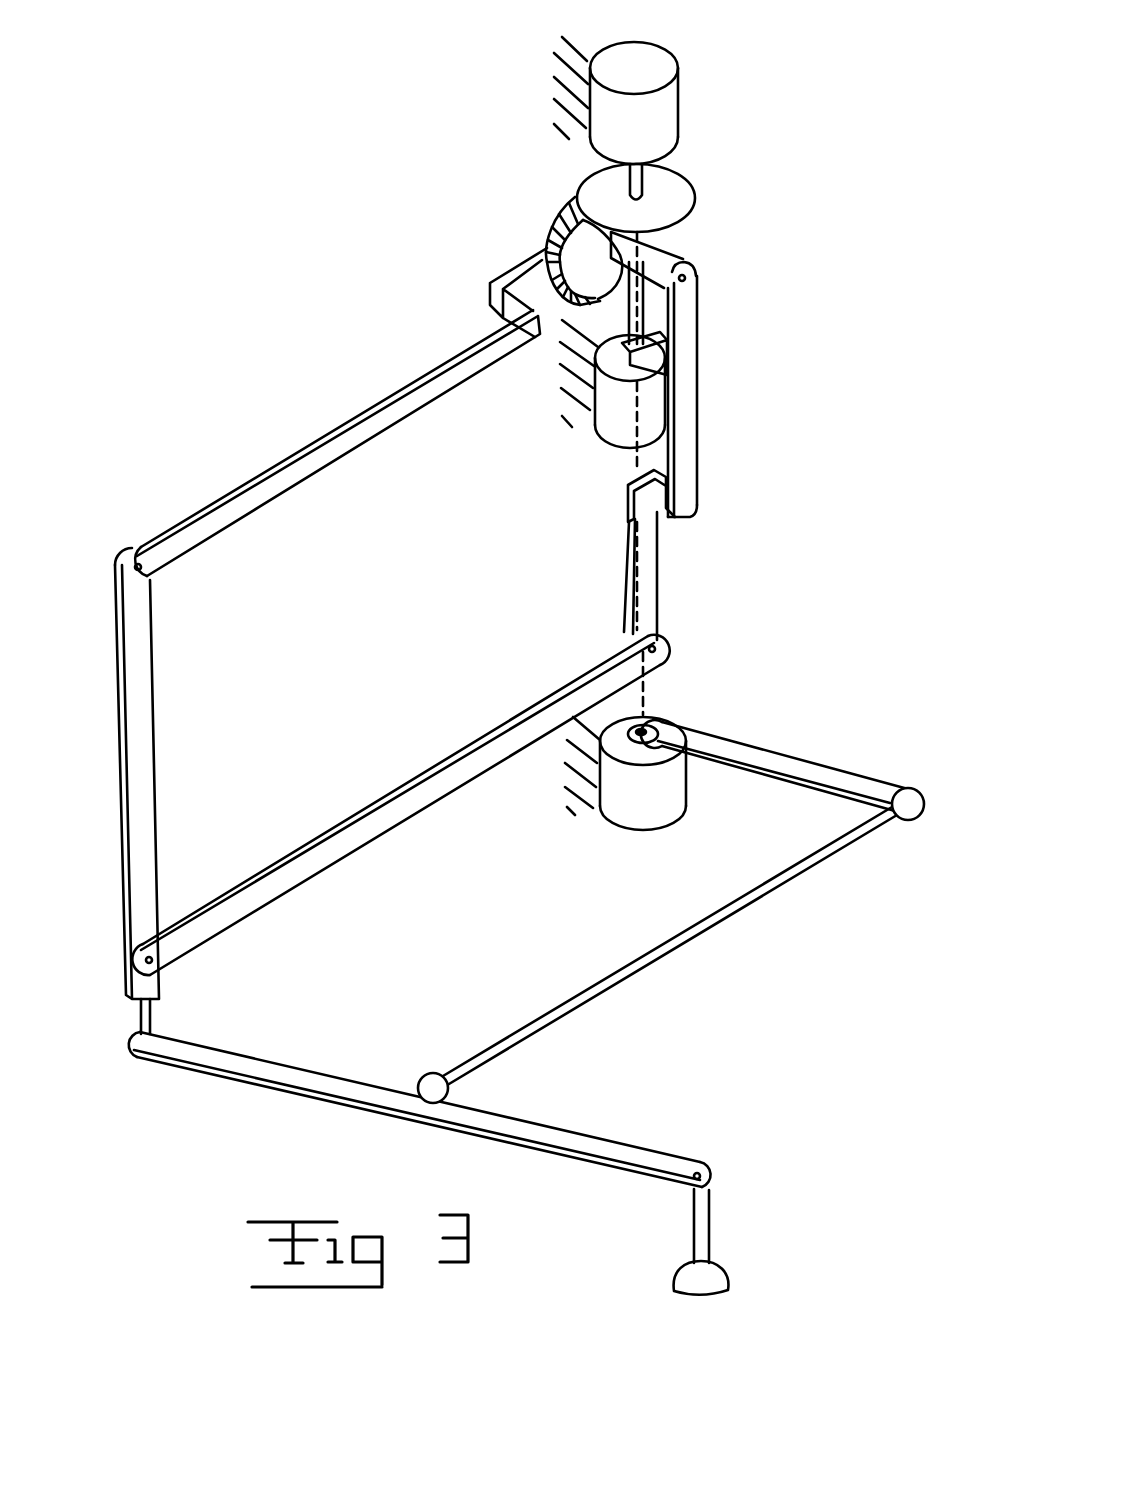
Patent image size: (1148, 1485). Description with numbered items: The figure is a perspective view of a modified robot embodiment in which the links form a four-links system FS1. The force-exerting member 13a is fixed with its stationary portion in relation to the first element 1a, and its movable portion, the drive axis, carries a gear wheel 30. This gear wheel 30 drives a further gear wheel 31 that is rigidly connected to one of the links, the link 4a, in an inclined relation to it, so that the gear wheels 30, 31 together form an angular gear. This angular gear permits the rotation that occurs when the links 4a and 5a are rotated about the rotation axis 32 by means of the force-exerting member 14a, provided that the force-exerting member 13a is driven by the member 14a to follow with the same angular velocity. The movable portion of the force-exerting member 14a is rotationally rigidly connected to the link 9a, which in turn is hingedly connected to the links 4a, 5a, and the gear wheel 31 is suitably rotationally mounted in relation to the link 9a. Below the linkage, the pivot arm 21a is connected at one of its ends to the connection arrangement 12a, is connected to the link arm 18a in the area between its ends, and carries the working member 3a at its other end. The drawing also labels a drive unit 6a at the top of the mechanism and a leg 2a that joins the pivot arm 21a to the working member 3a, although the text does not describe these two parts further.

The four-links system FS1 is at (243, 352).
The first element 1a is at (557, 99).
The leg 2a is at (715, 1222).
The working member 3a is at (718, 1268).
The link 4a is at (381, 420).
The link 5a is at (415, 804).
The drive unit 6a is at (693, 48).
The link 9a is at (681, 409).
The connection arrangement 12a is at (158, 1021).
The force-exerting member 13a is at (653, 122).
The force-exerting member 14a is at (612, 418).
The link arm 18a is at (645, 958).
The pivot arm 21a is at (392, 1104).
The gear wheel 30 is at (672, 203).
The gear wheel 31 is at (585, 250).
The rotation axis 32 is at (646, 685).